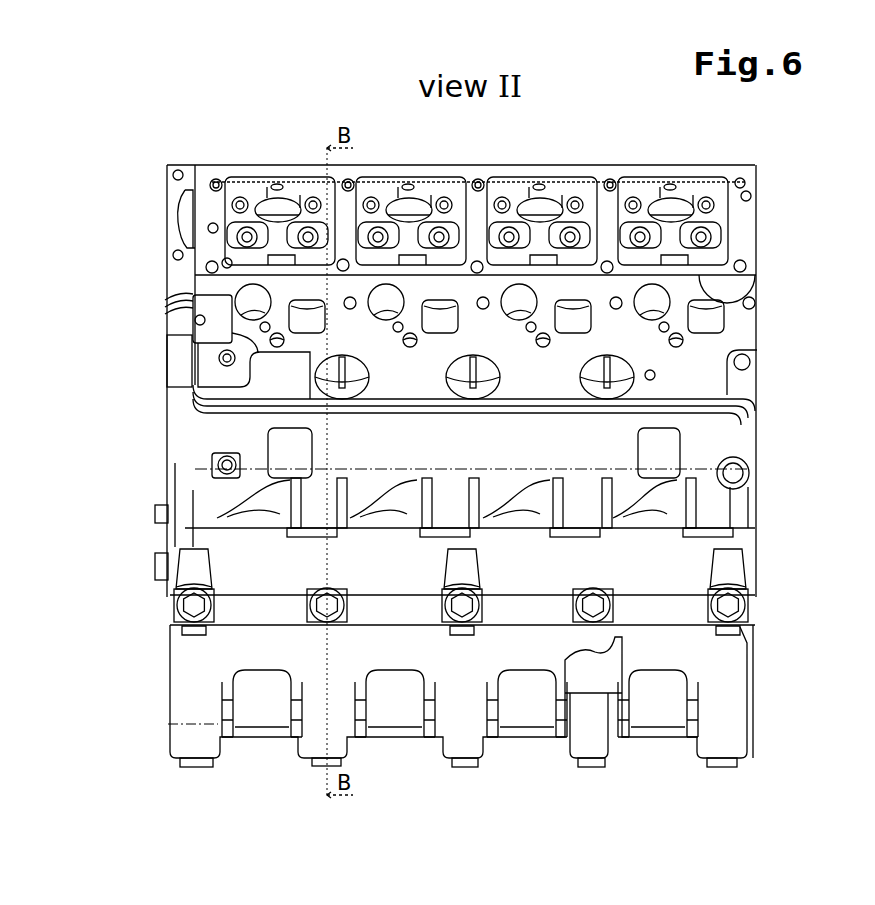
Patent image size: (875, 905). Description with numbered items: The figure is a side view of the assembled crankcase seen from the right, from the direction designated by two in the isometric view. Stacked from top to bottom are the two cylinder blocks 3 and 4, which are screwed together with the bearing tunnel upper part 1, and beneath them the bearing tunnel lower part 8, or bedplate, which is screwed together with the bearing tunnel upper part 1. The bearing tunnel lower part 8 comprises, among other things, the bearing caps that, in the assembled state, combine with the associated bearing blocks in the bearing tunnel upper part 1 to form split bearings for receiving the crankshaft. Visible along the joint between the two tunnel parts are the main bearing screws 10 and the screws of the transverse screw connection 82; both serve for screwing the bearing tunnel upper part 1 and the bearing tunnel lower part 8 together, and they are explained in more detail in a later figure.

The bearing tunnel upper part 1 is at (485, 632).
The cylinder block 3 is at (734, 335).
The cylinder block 4 is at (173, 237).
The bearing tunnel lower part 8 is at (492, 729).
The transverse screw connection 82 is at (324, 607).
The main bearing screws 10 is at (320, 763).